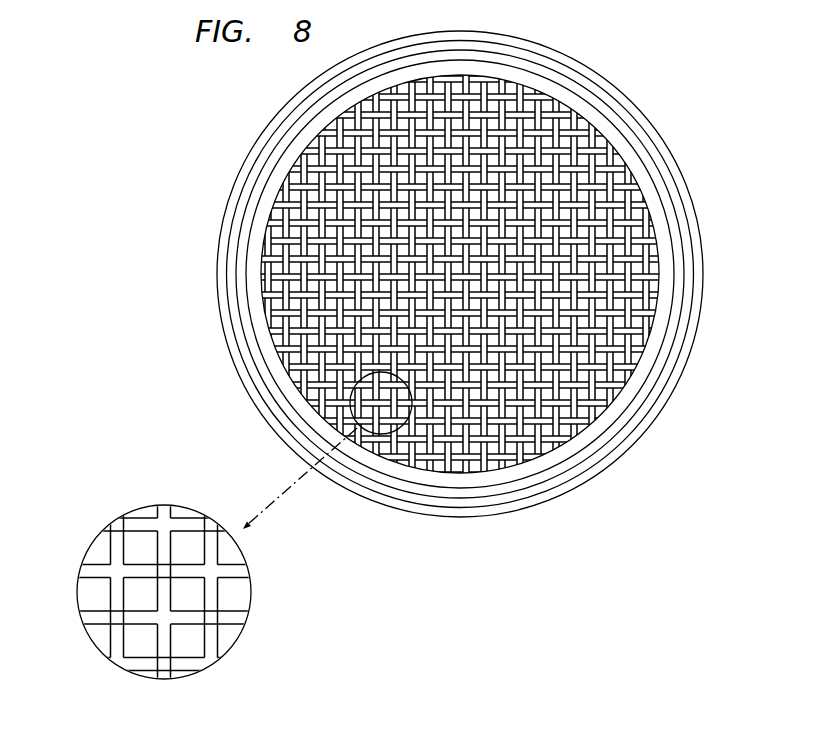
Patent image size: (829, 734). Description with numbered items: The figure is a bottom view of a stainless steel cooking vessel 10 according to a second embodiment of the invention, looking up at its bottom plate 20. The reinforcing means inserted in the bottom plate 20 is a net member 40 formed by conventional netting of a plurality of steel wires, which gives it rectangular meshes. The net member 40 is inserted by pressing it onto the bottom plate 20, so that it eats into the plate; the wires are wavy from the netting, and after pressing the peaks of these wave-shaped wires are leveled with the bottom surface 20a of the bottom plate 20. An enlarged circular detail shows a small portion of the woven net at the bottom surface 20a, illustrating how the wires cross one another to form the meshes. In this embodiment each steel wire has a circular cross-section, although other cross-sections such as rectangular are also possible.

The filter assembly 10 is at (688, 159).
The bottom plate 20 is at (680, 257).
The net member 40 is at (658, 328).
The bottom surface 20a is at (233, 591).